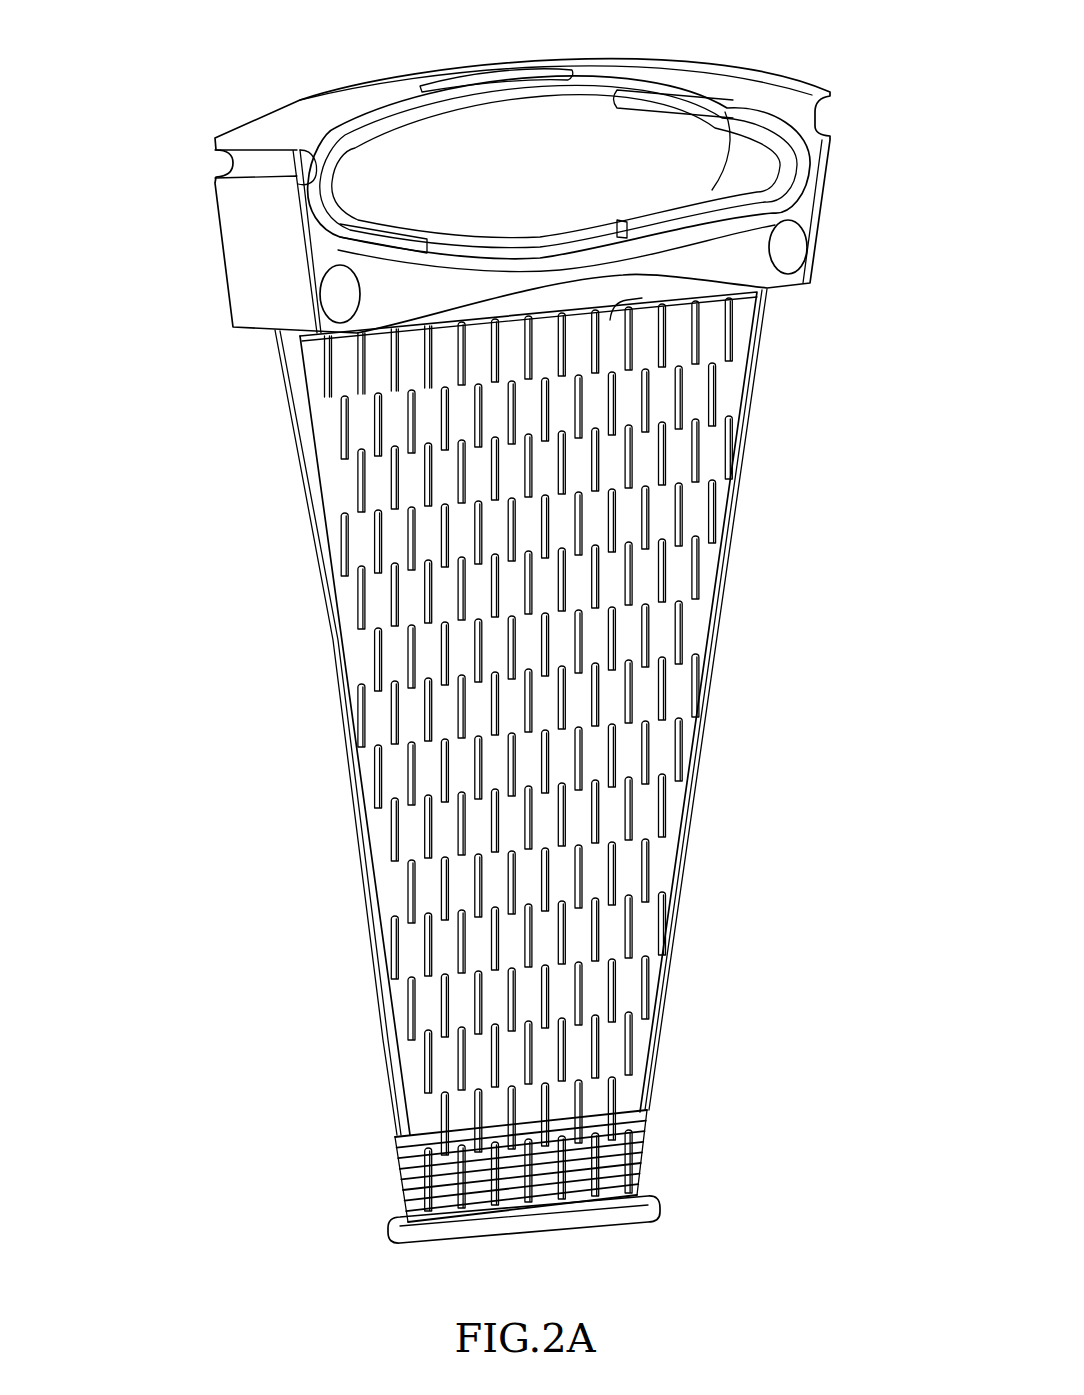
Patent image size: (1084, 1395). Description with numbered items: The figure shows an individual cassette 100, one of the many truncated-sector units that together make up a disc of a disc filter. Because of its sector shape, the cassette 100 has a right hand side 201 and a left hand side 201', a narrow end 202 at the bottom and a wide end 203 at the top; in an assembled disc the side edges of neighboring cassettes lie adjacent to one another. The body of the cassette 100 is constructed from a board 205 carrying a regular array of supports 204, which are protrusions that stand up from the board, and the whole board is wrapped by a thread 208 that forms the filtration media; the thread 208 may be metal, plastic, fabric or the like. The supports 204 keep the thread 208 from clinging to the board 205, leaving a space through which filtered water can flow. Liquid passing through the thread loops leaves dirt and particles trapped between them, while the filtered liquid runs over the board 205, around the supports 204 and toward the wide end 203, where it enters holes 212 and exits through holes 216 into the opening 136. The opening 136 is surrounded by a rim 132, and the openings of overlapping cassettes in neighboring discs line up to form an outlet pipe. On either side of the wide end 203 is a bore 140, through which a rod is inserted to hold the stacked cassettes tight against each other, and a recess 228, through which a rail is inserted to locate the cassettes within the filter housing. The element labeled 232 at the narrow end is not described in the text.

The cassette 100 is at (567, 750).
The rim 132 is at (502, 200).
The opening 136 is at (438, 172).
The bore 140 is at (790, 247).
The right hand side 201 is at (550, 700).
The left hand side 201' is at (312, 732).
The narrow end 202 is at (505, 1192).
The wide end 203 is at (178, 243).
The supports 204 is at (690, 617).
The board 205 is at (595, 754).
The thread 208 is at (640, 1090).
The holes 212 is at (622, 313).
The holes 216 is at (566, 248).
The recess 228 is at (247, 163).
The base plate 232 is at (613, 1232).